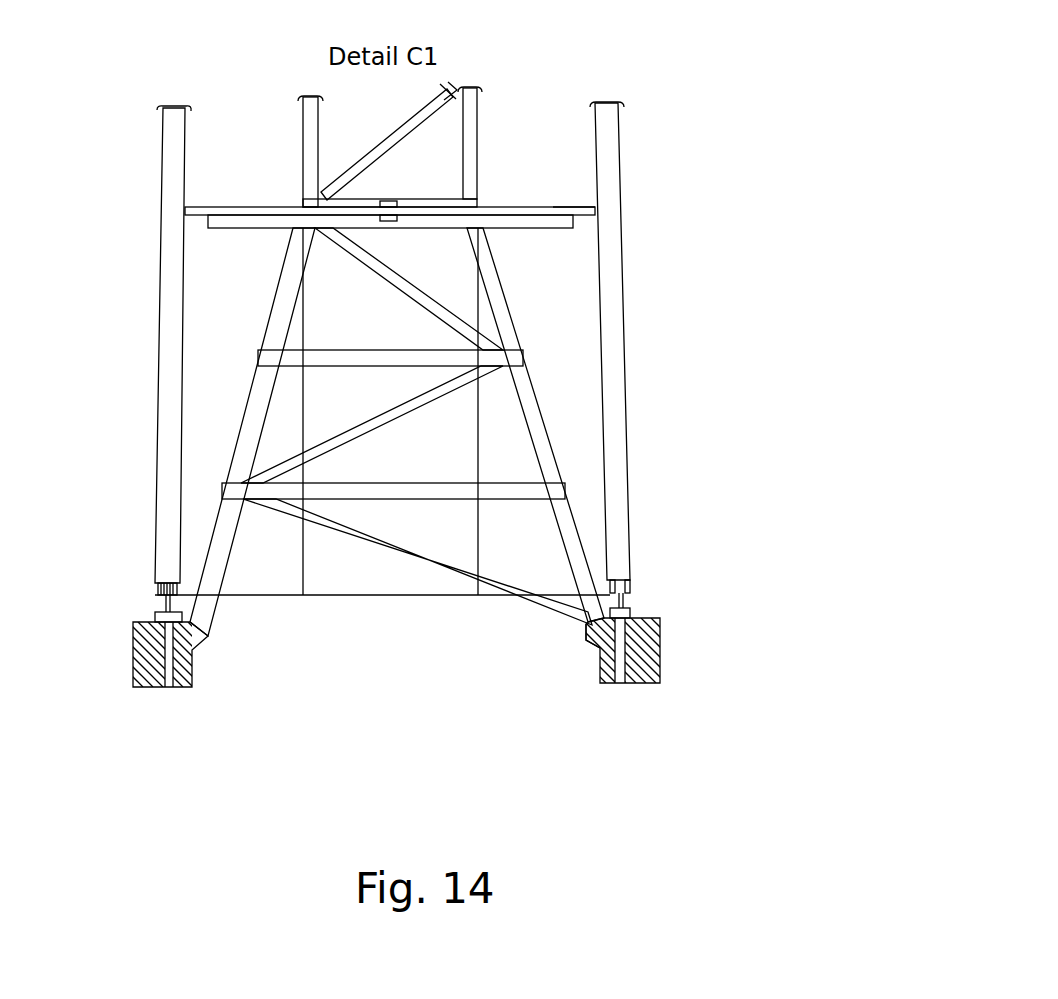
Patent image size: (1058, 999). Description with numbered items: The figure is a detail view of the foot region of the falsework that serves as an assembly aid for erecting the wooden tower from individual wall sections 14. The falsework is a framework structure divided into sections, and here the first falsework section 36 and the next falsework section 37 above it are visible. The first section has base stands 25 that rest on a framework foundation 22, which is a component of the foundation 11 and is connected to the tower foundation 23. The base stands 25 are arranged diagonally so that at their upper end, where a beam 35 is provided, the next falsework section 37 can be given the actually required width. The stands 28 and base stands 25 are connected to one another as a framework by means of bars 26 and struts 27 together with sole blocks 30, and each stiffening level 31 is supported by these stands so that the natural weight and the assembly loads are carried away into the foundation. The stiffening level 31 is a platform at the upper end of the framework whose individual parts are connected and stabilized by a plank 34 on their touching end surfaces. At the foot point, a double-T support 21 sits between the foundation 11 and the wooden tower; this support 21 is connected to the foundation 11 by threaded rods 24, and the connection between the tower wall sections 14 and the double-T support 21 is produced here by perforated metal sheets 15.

The foundation 11 is at (660, 643).
The wall section 14 is at (610, 292).
The perforated metal sheet 15 is at (618, 578).
The double-T support 21 is at (625, 603).
The framework foundation 22 is at (595, 640).
The tower foundation 23 is at (632, 612).
The threaded rod 24 is at (192, 650).
The base stands 25 is at (545, 412).
The bar 26 is at (560, 485).
The struts 27 is at (455, 87).
The stands 28 is at (477, 128).
The sole block 30 is at (440, 199).
The stiffening level 31 is at (553, 208).
The plank 34 is at (394, 200).
The beam 35 is at (542, 222).
The first falsework section 36 is at (48, 464).
The falsework section 37 is at (74, 152).